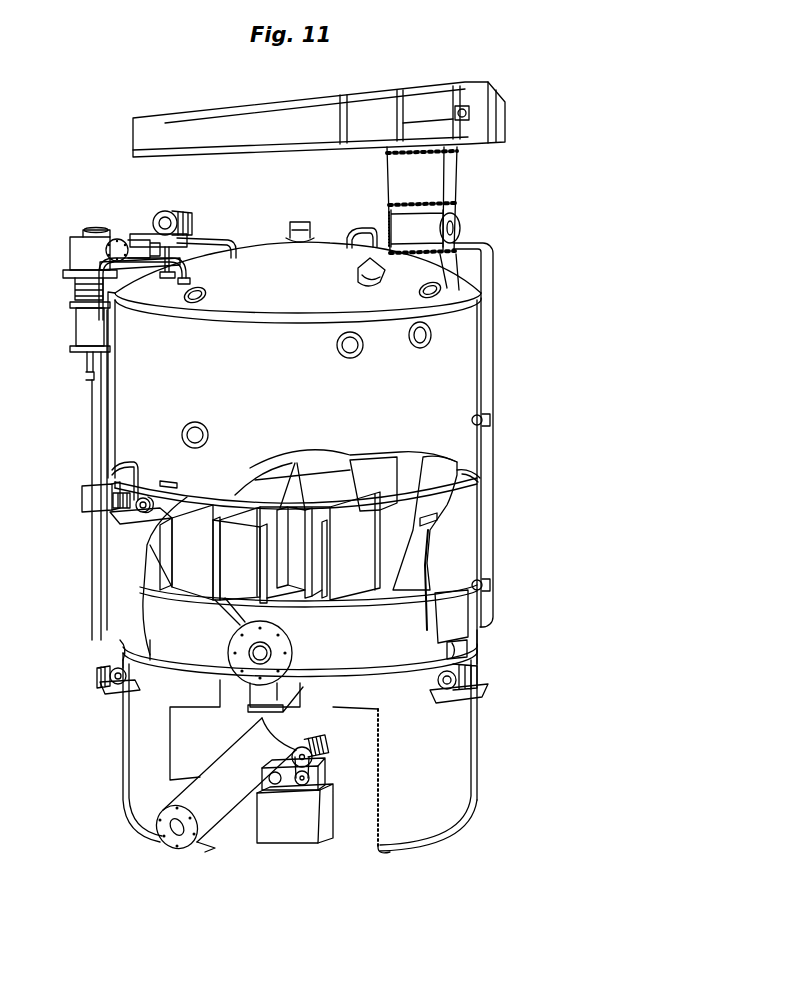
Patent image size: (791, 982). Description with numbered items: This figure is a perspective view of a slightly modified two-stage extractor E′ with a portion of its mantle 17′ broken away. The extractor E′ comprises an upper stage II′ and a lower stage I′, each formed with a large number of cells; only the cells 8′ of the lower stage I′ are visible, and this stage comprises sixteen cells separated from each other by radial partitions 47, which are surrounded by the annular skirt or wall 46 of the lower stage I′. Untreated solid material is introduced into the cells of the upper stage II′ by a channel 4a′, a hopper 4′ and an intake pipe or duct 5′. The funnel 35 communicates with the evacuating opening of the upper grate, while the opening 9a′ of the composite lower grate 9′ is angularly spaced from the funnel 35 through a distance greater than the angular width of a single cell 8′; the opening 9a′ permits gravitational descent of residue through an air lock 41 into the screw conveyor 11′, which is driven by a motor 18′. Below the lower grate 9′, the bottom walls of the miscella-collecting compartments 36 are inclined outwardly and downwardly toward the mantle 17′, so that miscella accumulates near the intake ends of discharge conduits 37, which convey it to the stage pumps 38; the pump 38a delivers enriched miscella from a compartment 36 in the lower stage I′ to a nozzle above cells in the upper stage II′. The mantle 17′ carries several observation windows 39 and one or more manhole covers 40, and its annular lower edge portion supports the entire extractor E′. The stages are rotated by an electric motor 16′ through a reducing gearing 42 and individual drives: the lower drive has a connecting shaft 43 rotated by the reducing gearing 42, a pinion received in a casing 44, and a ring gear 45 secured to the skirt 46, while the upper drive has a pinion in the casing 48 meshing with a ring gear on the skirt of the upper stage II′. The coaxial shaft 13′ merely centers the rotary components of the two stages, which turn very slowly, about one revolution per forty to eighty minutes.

The channel 4a′ is at (303, 118).
The hopper 4′ is at (433, 221).
The intake pipe or duct 5′ is at (452, 273).
The coaxial shaft 13′ is at (302, 222).
The electric motor 16′ is at (178, 222).
The reducing gearing 42 is at (70, 262).
The casing 48 is at (76, 330).
The connecting shaft 43 is at (92, 426).
The casing 44 is at (82, 497).
The stage pumps 38 is at (118, 514).
The pump 38a is at (478, 678).
The discharge conduits 37 is at (178, 472).
The observation windows 39 is at (363, 350).
The cells 8′ is at (385, 560).
The radial partitions 47 is at (279, 473).
The composite lower grate 9′ is at (206, 600).
The opening 9a′ is at (226, 621).
The funnel 35 is at (353, 480).
The miscella-collecting compartments 36 is at (262, 640).
The mantle 17′ is at (470, 506).
The ring gear 45 is at (437, 528).
The annular skirt or wall 46 is at (430, 556).
The manhole covers 40 is at (450, 597).
The air lock 41 is at (285, 645).
The screw conveyor 11′ is at (228, 800).
The motor 18′ is at (318, 751).
The two-stage extractor E′ is at (540, 360).
The upper stage II′ is at (490, 402).
The lower stage I′ is at (490, 551).